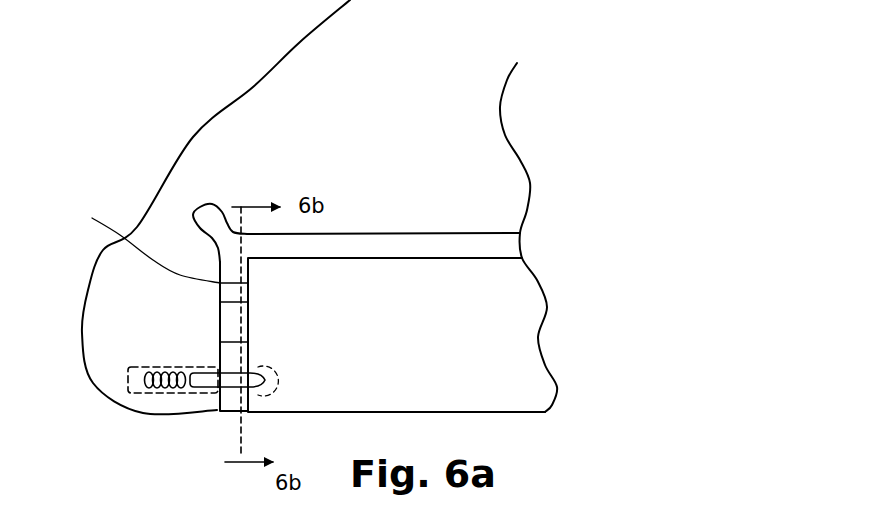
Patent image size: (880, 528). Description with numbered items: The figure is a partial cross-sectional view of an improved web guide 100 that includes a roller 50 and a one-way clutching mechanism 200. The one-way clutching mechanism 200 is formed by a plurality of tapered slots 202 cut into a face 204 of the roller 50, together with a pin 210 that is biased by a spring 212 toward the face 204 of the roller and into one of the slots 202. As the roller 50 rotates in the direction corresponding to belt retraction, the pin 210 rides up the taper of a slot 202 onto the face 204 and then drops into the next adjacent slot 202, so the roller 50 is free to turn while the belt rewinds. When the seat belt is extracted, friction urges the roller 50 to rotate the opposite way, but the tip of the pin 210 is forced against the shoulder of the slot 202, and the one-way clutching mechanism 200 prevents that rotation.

The web guide 100 is at (138, 166).
The face 204 is at (133, 243).
The roller 50 is at (375, 237).
The one-way clutching mechanism 200 is at (225, 418).
The tapered slots 202 is at (268, 370).
The spring 212 is at (152, 365).
The pin 210 is at (203, 380).